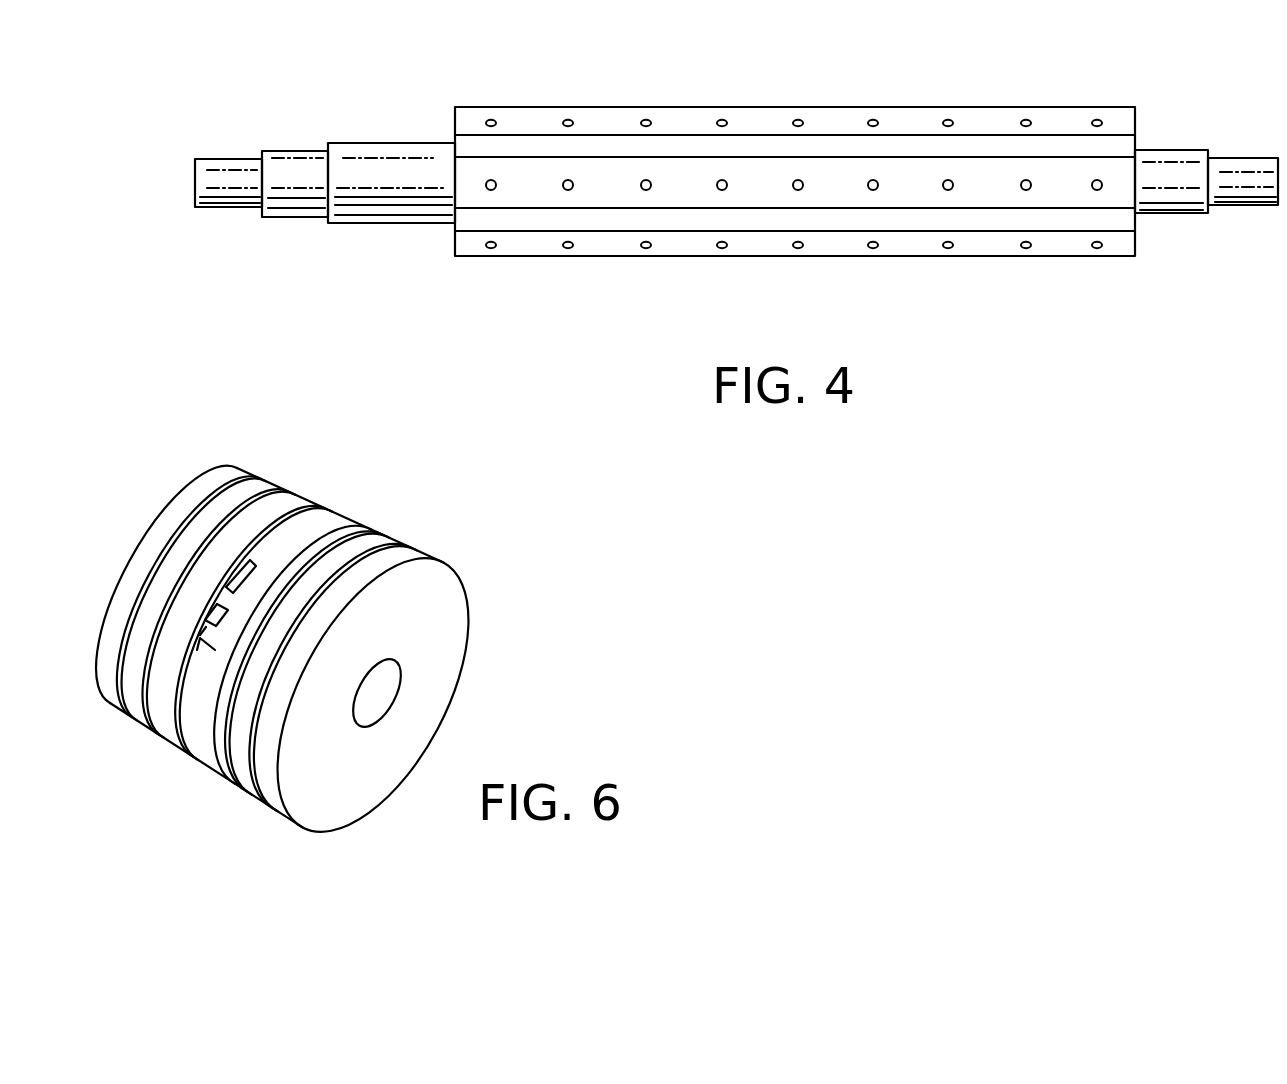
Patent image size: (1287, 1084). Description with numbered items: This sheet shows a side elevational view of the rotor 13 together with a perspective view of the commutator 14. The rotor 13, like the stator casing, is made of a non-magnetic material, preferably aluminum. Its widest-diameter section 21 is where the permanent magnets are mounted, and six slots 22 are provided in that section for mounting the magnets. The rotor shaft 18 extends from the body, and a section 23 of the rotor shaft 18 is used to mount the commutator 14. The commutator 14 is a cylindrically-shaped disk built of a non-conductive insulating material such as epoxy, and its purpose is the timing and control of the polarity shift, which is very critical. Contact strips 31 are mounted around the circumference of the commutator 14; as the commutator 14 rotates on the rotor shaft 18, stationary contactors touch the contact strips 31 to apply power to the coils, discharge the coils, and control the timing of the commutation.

In FIG. 4, the rotor 13 is at (1136, 66).
In FIG. 4, the section of the rotor having the widest diameter 21 is at (755, 257).
In FIG. 4, the slots 22 is at (1054, 119).
In FIG. 4, the section of the rotor shaft 23 is at (360, 223).
In FIG. 4, the rotor shaft 18 is at (1243, 204).
In FIG. 6, the commutator 14 is at (418, 530).
In FIG. 6, the contact strips 31 is at (263, 800).